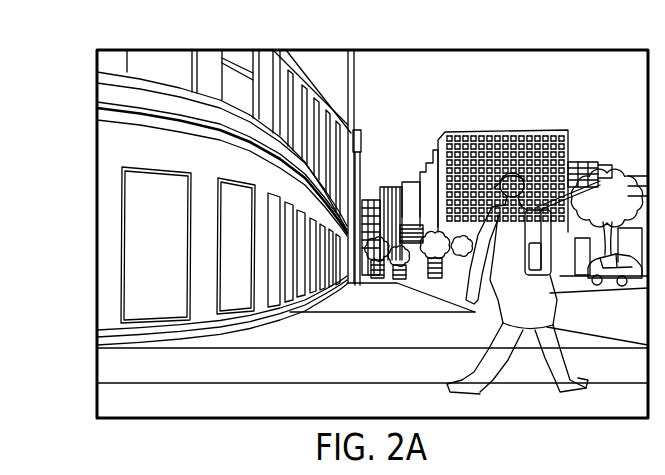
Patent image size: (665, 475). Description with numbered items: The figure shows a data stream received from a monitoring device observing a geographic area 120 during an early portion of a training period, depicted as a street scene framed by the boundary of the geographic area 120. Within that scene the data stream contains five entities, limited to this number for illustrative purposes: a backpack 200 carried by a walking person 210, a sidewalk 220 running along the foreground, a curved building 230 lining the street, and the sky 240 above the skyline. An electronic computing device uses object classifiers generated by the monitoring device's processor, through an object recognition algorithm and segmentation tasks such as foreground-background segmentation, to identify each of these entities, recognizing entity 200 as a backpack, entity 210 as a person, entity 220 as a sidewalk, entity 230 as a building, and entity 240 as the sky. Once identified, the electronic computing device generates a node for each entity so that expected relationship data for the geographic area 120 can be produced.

The geographic area 120 is at (121, 44).
The backpack entity 200 is at (565, 282).
The person entity 210 is at (536, 180).
The sidewalk entity 220 is at (394, 385).
The building entity 230 is at (355, 128).
The sky entity 240 is at (583, 87).